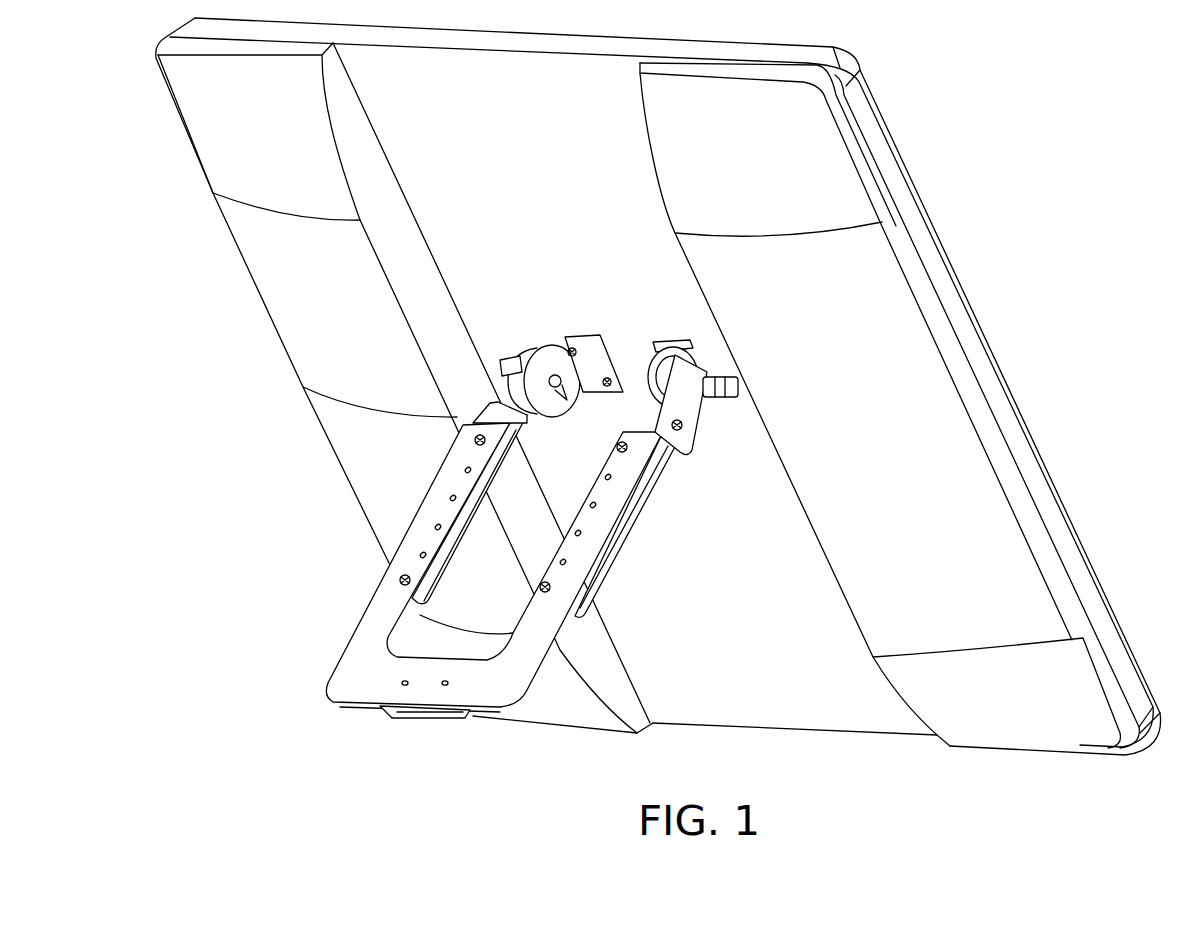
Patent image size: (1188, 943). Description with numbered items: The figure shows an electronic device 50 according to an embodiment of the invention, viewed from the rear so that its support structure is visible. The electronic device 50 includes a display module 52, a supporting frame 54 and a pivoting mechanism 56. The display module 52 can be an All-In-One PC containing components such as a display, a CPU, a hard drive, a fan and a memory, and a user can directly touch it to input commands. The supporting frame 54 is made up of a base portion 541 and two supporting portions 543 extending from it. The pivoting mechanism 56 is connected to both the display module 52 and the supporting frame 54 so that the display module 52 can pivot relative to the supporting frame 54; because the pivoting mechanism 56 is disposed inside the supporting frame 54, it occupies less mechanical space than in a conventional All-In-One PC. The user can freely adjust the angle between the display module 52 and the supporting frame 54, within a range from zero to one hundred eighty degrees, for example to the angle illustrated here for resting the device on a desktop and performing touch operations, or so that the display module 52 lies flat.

The electronic device 50 is at (658, 386).
The display module 52 is at (928, 255).
The supporting frame 54 is at (441, 568).
The base portion 541 is at (362, 715).
The supporting portion 543 is at (390, 603).
The pivoting mechanism 56 is at (692, 360).